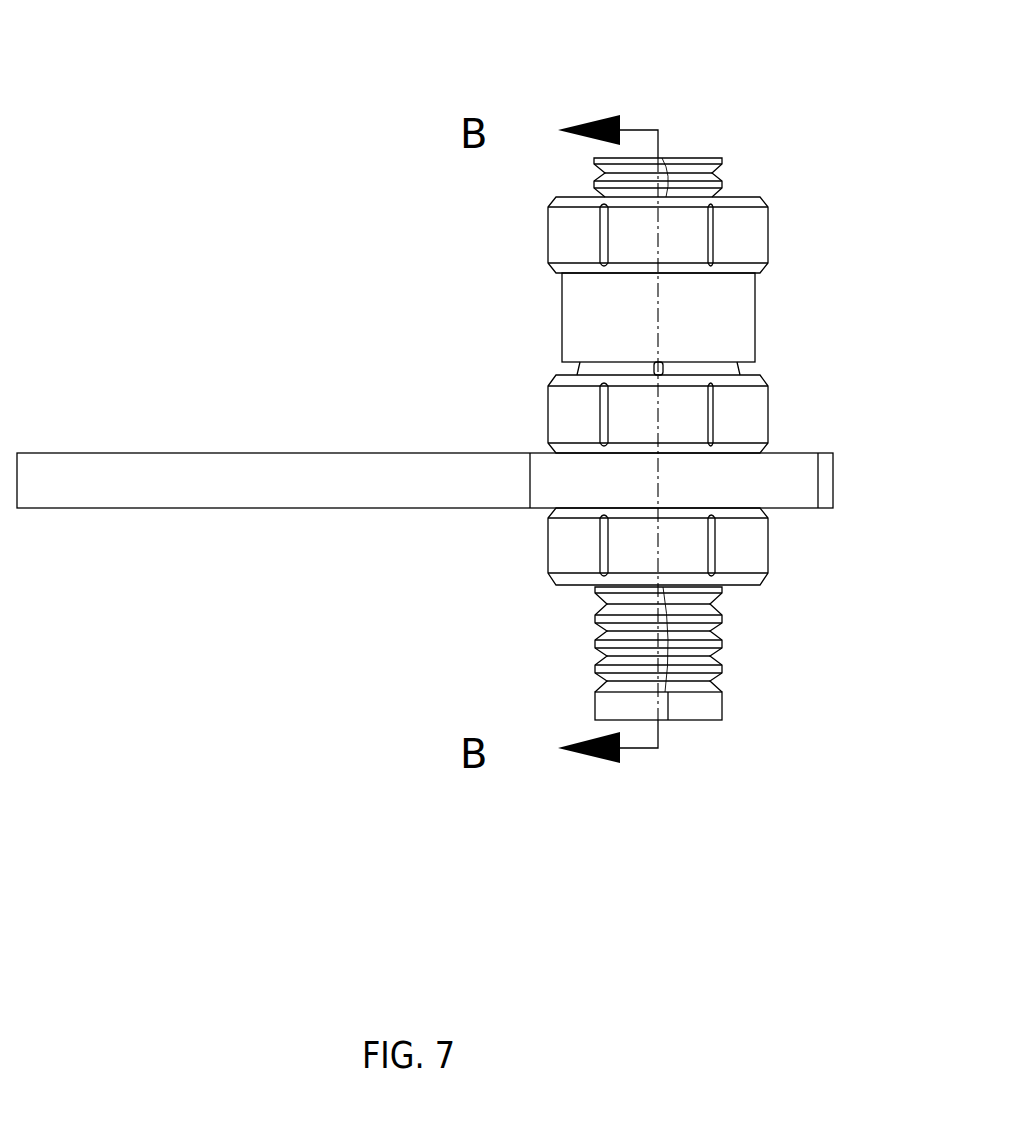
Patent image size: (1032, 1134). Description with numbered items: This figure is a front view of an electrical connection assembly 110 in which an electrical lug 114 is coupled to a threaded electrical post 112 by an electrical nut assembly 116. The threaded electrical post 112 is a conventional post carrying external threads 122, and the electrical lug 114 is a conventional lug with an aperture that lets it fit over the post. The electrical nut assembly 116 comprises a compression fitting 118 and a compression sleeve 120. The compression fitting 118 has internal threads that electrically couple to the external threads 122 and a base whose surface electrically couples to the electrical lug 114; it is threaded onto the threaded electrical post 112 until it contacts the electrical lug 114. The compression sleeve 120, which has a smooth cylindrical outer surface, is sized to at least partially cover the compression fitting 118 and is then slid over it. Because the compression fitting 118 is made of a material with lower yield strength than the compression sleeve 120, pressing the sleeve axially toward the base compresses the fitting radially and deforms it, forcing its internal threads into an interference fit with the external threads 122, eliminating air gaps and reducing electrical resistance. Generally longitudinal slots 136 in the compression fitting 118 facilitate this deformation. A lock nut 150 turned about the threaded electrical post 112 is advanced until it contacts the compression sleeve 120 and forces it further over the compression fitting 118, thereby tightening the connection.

The electrical connection assembly 110 is at (392, 114).
The threaded electrical post 112 is at (605, 665).
The electrical lug 114 is at (167, 478).
The electrical nut assembly 116 is at (795, 300).
The compression fitting 118 is at (565, 427).
The compression sleeve 120 is at (575, 322).
The external threads 122 is at (718, 643).
The generally longitudinal slots 136 is at (665, 376).
The lock nut 150 is at (560, 247).